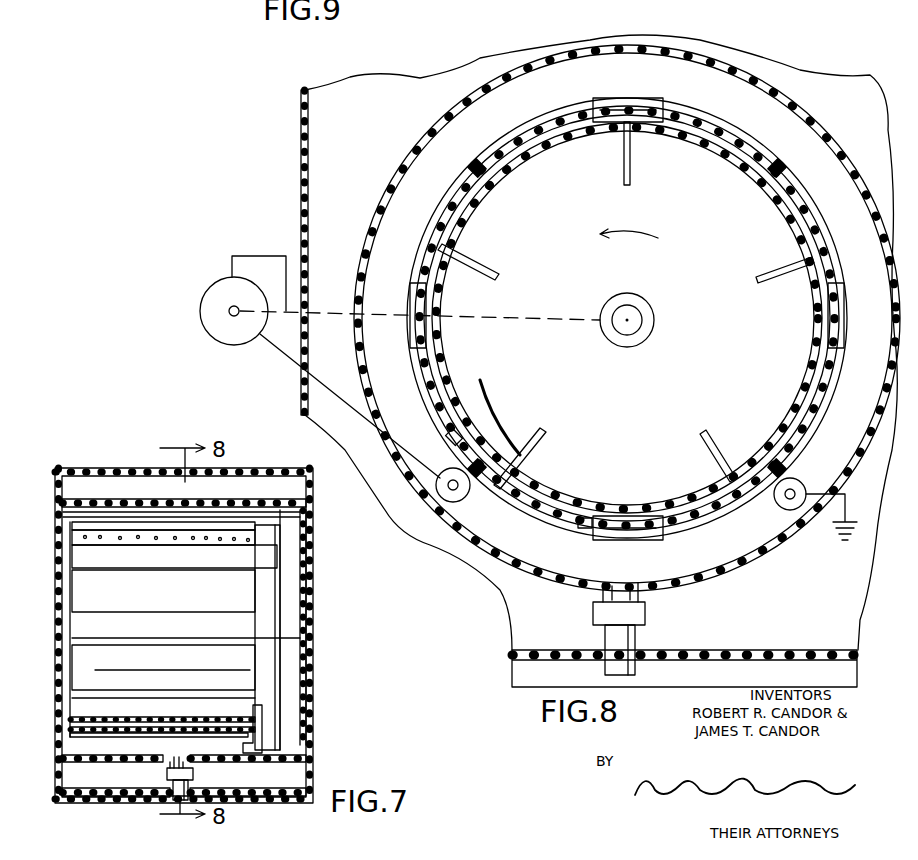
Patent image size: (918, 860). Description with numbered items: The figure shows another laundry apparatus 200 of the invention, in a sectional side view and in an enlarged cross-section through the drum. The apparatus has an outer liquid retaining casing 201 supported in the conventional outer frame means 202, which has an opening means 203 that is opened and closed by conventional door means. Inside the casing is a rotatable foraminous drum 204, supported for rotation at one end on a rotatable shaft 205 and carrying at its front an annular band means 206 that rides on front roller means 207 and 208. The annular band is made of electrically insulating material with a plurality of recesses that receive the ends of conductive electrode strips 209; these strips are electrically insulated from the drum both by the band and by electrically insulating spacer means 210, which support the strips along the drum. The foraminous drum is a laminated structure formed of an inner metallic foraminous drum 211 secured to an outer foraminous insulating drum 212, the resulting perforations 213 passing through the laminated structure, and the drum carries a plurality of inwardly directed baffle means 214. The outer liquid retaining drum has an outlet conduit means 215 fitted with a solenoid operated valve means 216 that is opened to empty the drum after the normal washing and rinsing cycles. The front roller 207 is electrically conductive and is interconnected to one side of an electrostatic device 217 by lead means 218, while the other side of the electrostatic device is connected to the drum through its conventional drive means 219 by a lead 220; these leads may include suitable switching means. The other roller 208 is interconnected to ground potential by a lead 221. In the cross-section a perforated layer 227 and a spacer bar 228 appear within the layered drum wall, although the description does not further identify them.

In FIG. 8, the laundry apparatus 200 is at (765, 37).
In FIG. 7, the laundry apparatus 200 is at (318, 722).
In FIG. 8, the outer liquid retaining casing 201 is at (738, 568).
In FIG. 7, the outer liquid retaining casing 201 is at (262, 500).
In FIG. 8, the outer frame means 202 is at (300, 118).
In FIG. 7, the outer frame means 202 is at (100, 468).
In FIG. 8, the opening means 203 is at (684, 668).
In FIG. 7, the opening means 203 is at (316, 585).
In FIG. 8, the rotatable foraminous drum 204 is at (561, 493).
In FIG. 7, the rotatable foraminous drum 204 is at (125, 645).
In FIG. 8, the rotatable shaft 205 is at (636, 312).
In FIG. 7, the rotatable shaft 205 is at (70, 624).
In FIG. 8, the front annular band means 206 is at (700, 535).
In FIG. 7, the front annular band means 206 is at (268, 672).
In FIG. 8, the front roller means 207 is at (466, 500).
In FIG. 7, the front roller means 207 is at (255, 698).
In FIG. 8, the front roller means 208 is at (798, 482).
In FIG. 8, the conductive electrode strips 209 is at (640, 98).
In FIG. 7, the conductive electrode strips 209 is at (262, 632).
In FIG. 8, the electrically insulating spacer means 210 is at (590, 105).
In FIG. 7, the electrically insulating spacer means 210 is at (140, 525).
In FIG. 8, the inner metallic foraminous drum 211 is at (445, 385).
In FIG. 8, the outer foraminous insulating drum 212 is at (440, 400).
In FIG. 8, the perforations 213 is at (458, 418).
In FIG. 8, the inwardly directed baffle means 214 is at (545, 438).
In FIG. 8, the outlet conduit means 215 is at (640, 596).
In FIG. 7, the outlet conduit means 215 is at (176, 762).
In FIG. 8, the solenoid operated valve means 216 is at (646, 616).
In FIG. 7, the solenoid operated valve means 216 is at (180, 784).
In FIG. 8, the electrostatic device 217 is at (200, 311).
In FIG. 8, the lead means 218 is at (285, 353).
In FIG. 8, the drive means 219 is at (332, 311).
In FIG. 8, the lead 220 is at (262, 256).
In FIG. 8, the lead 221 is at (845, 514).
In FIG. 7, the perforated layer 227 is at (268, 590).
In FIG. 8, the spacer bar 228 is at (452, 440).
In FIG. 7, the spacer bar 228 is at (262, 612).